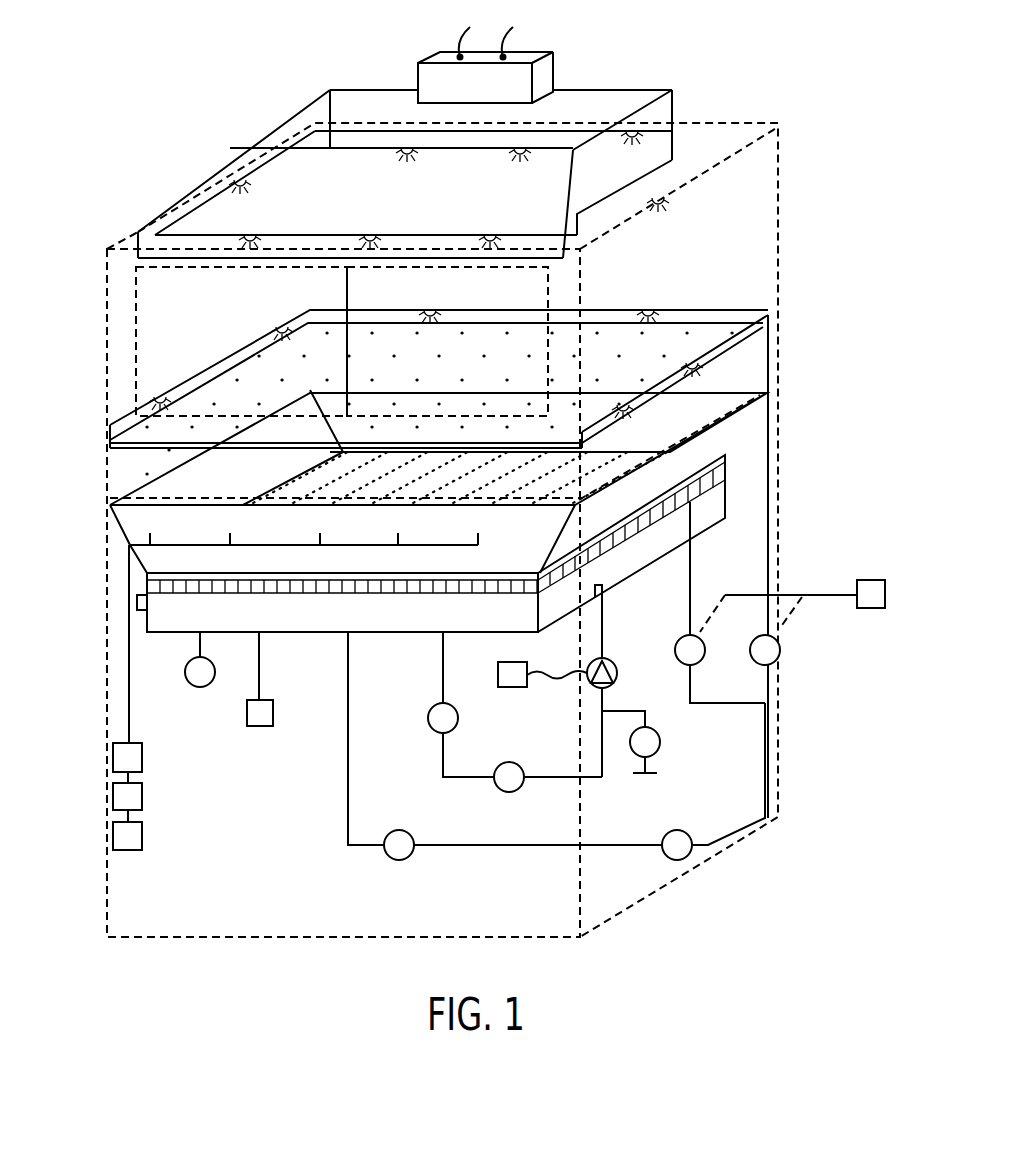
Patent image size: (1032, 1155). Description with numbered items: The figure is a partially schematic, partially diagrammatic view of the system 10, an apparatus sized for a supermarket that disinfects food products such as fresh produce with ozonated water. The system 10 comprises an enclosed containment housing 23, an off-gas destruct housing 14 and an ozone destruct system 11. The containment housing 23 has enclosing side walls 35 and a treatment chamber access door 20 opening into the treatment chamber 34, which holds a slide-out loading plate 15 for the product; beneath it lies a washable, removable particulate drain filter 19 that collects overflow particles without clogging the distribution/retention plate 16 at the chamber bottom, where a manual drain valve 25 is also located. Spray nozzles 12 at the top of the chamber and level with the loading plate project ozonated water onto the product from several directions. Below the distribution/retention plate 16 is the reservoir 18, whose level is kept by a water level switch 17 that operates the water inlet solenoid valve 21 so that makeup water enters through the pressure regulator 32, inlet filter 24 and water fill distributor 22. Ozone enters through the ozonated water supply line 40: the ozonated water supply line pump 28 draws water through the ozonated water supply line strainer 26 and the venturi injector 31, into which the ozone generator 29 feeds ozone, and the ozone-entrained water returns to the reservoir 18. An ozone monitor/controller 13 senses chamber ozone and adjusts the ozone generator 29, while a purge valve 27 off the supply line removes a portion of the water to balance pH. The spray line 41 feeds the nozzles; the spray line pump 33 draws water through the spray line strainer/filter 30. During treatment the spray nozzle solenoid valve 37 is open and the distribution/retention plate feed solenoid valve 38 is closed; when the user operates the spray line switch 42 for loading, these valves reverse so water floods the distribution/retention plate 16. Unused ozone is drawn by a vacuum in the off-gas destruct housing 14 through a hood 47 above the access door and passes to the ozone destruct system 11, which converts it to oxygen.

The system 10 is at (778, 127).
The ozone destruct system 11 is at (553, 72).
The spray nozzles 12 is at (254, 232).
The ozone monitor/controller 13 is at (273, 712).
The off-gas destruct housing 14 is at (628, 92).
The loading plate 15 is at (700, 316).
The distribution/retention plate 16 is at (725, 477).
The water level switch 17 is at (137, 600).
The reservoir 18 is at (727, 510).
The particulate drain filter 19 is at (280, 492).
The treatment chamber access door 20 is at (478, 330).
The water inlet solenoid valve 21 is at (113, 757).
The water fill distributor 22 is at (490, 545).
The containment housing 23 is at (138, 232).
The inlet filter 24 is at (113, 797).
The manual drain valve 25 is at (186, 674).
The ozonated water supply line strainer 26 is at (428, 720).
The purge valve 27 is at (647, 727).
The ozonated water supply line pump 28 is at (509, 761).
The ozone generator 29 is at (498, 676).
The spray line strainer/filter 30 is at (399, 861).
The venturi injector 31 is at (604, 658).
The pressure regulator 32 is at (113, 836).
The spray line pump 33 is at (679, 830).
The treatment chamber 34 is at (218, 332).
The side walls 35 is at (708, 177).
The spray nozzle solenoid valve 37 is at (780, 655).
The distribution/retention plate feed solenoid valve 38 is at (690, 635).
The ozonated water supply line 40 is at (443, 672).
The spray line 41 is at (767, 742).
The spray line switch 42 is at (870, 580).
The hood 47 is at (192, 183).